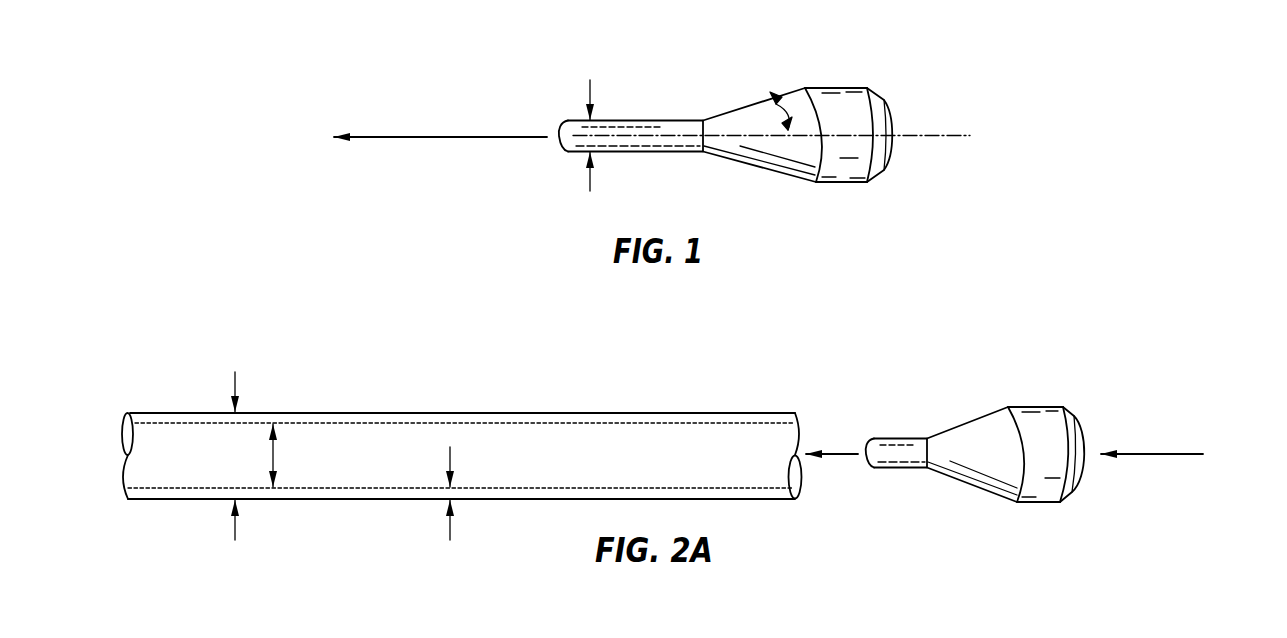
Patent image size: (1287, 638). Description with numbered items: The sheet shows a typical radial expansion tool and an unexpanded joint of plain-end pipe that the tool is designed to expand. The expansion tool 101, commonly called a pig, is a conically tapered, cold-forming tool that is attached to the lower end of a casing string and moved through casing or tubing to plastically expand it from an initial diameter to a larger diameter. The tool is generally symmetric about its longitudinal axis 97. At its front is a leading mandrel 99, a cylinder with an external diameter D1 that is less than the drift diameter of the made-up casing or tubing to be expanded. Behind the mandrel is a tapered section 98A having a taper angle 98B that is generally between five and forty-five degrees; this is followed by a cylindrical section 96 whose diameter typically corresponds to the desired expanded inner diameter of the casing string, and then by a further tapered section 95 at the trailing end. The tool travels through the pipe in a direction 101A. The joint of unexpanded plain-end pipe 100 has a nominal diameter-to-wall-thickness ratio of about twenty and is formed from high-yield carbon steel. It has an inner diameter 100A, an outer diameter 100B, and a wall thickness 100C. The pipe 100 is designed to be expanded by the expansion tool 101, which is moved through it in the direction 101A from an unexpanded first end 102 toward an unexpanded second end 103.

In FIG. 1, the tapered section 95 is at (869, 92).
In FIG. 1, the cylindrical section 96 is at (838, 86).
In FIG. 1, the longitudinal axis 97 is at (918, 132).
In FIG. 1, the tapered section 98A is at (762, 162).
In FIG. 1, the taper angle 98B is at (787, 106).
In FIG. 1, the leading mandrel 99 is at (650, 120).
In FIG. 1, the expansion tool 101 is at (751, 133).
In FIG. 2A, the expansion tool 101 is at (1038, 406).
In FIG. 1, the direction 101A is at (463, 136).
In FIG. 2A, the direction 101A is at (1147, 454).
In FIG. 1, the external diameter D1 is at (589, 120).
In FIG. 2A, the plain-end pipe 100 is at (465, 458).
In FIG. 2A, the inner diameter 100A is at (460, 455).
In FIG. 2A, the outer diameter 100B is at (235, 458).
In FIG. 2A, the wall thickness 100C is at (451, 510).
In FIG. 2A, the first end 102 is at (778, 413).
In FIG. 2A, the second end 103 is at (160, 413).